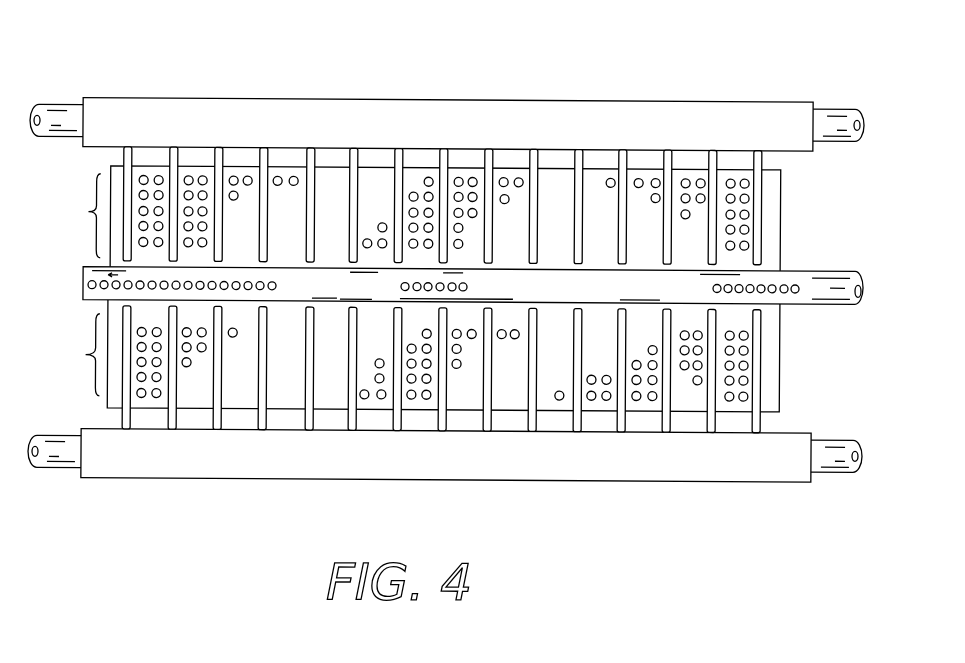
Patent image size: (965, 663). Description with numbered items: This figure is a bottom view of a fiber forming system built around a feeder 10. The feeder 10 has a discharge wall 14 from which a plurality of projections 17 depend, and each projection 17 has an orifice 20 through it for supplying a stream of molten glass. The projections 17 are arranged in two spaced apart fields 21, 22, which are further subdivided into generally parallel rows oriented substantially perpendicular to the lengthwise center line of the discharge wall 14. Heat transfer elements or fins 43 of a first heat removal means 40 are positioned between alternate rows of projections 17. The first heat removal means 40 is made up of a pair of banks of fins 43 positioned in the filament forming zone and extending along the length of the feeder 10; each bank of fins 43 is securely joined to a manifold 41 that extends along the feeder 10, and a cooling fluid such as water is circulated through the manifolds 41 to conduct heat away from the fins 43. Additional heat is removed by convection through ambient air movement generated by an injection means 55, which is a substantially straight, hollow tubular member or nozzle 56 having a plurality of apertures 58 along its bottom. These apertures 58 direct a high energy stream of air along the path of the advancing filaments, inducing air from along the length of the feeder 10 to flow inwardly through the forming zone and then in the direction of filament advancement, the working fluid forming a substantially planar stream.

The feeder 10 is at (471, 298).
The discharge wall 14 is at (152, 259).
The projections 17 is at (277, 178).
The orifice 20 is at (293, 178).
The field 21 is at (88, 214).
The field 22 is at (86, 357).
The first heat removal means 40 is at (80, 97).
The manifold 41 is at (196, 100).
The heat transfer elements or fins 43 is at (124, 155).
The injection means 55 is at (820, 266).
The tubular member or nozzle 56 is at (856, 274).
The apertures 58 is at (137, 289).